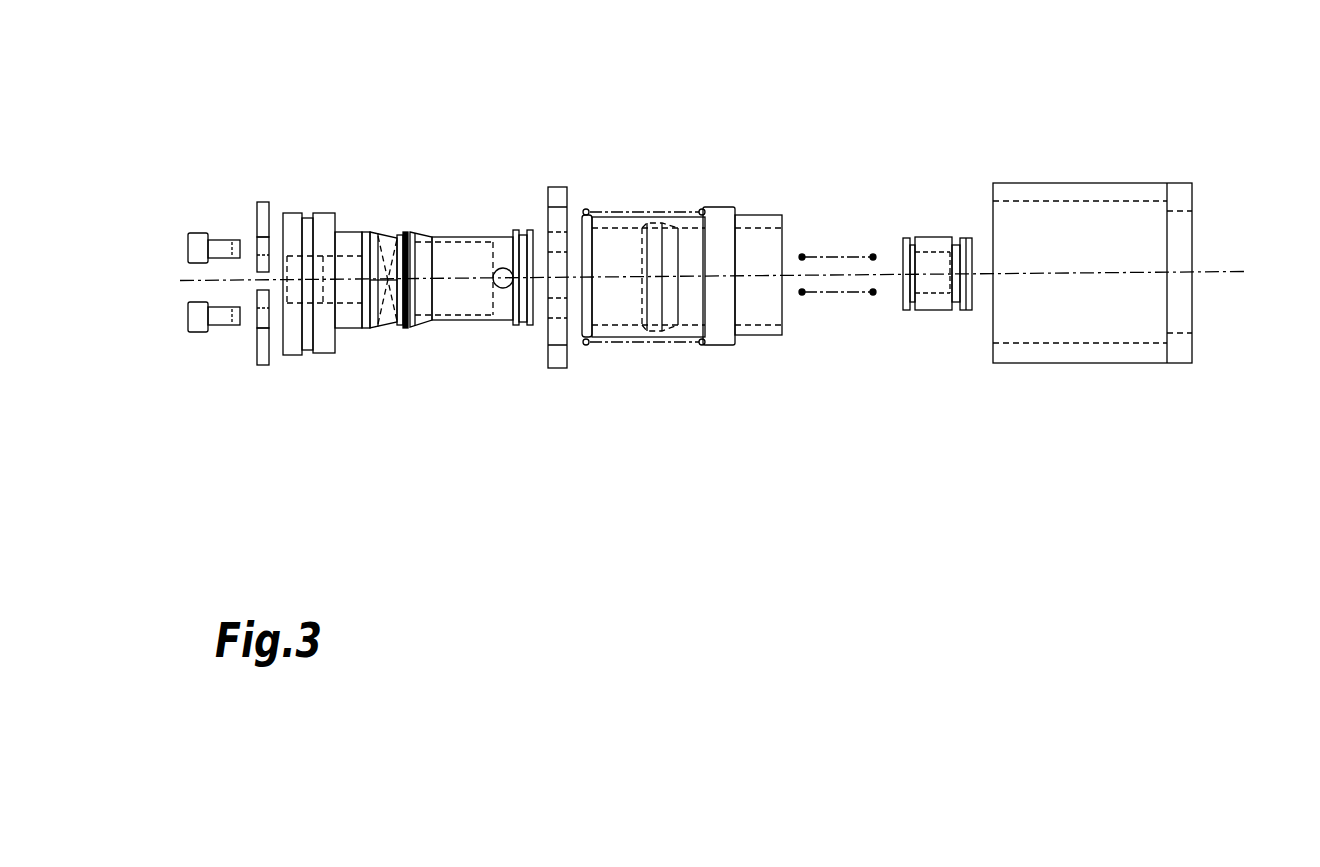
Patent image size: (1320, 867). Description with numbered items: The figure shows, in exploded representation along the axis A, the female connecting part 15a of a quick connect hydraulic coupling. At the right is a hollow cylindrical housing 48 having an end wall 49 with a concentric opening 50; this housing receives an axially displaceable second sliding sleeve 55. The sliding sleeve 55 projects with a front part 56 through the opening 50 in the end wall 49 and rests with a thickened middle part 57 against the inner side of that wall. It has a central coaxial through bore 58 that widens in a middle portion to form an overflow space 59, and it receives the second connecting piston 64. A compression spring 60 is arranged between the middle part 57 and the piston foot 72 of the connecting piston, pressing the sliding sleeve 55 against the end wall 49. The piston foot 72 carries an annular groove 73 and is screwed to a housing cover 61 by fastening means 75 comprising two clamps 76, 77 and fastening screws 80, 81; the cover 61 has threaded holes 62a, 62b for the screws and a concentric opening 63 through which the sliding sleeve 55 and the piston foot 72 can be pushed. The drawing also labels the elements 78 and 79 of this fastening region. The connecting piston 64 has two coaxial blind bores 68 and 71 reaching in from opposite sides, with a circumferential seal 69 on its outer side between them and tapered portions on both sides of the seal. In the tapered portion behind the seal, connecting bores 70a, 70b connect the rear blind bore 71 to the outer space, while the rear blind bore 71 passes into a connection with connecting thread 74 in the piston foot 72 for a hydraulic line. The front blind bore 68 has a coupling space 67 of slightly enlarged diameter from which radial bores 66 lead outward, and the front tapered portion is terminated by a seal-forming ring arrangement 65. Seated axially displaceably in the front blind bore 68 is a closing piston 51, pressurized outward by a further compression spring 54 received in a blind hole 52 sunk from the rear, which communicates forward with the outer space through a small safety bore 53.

The female connecting part 15a is at (853, 528).
The axis A is at (1225, 272).
The hollow cylindrical housing 48 is at (1087, 400).
The end wall 49 is at (1177, 192).
The concentric opening 50 is at (1181, 334).
The closing piston 51 is at (937, 398).
The blind hole 52 is at (928, 248).
The safety bore 53 is at (968, 245).
The compression spring 54 is at (840, 257).
The second sliding sleeve 55 is at (662, 395).
The front part 56 is at (777, 333).
The thickened middle part 57 is at (723, 207).
The through bore 58 is at (688, 228).
The overflow space 59 is at (664, 331).
The compression spring 60 is at (688, 341).
The housing cover 61 is at (558, 388).
The threaded hole 62a is at (558, 318).
The threaded hole 62b is at (560, 245).
The concentric opening 63 is at (557, 205).
The second connecting piston 64 is at (437, 385).
The seal-forming ring arrangement 65 is at (528, 228).
The radial bores 66 is at (505, 290).
The coupling space 67 is at (503, 237).
The front blind bore 68 is at (463, 318).
The circumferential seal 69 is at (397, 237).
The connecting bore 70a is at (380, 238).
The connecting bore 70b is at (382, 317).
The rear blind bore 71 is at (345, 257).
The piston foot 72 is at (293, 220).
The annular groove 73 is at (308, 215).
The connecting thread 74 is at (293, 308).
The fastening means 75 is at (272, 467).
The clamp 76 is at (267, 353).
The clamp 77 is at (263, 205).
The washer 78 is at (258, 321).
The washer 79 is at (262, 250).
The fastening screw 80 is at (198, 327).
The fastening screw 81 is at (199, 238).